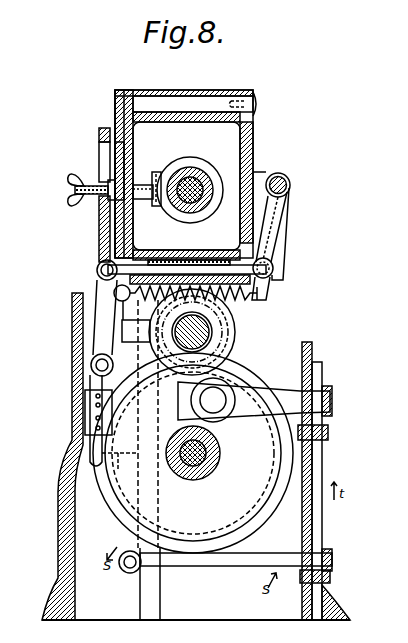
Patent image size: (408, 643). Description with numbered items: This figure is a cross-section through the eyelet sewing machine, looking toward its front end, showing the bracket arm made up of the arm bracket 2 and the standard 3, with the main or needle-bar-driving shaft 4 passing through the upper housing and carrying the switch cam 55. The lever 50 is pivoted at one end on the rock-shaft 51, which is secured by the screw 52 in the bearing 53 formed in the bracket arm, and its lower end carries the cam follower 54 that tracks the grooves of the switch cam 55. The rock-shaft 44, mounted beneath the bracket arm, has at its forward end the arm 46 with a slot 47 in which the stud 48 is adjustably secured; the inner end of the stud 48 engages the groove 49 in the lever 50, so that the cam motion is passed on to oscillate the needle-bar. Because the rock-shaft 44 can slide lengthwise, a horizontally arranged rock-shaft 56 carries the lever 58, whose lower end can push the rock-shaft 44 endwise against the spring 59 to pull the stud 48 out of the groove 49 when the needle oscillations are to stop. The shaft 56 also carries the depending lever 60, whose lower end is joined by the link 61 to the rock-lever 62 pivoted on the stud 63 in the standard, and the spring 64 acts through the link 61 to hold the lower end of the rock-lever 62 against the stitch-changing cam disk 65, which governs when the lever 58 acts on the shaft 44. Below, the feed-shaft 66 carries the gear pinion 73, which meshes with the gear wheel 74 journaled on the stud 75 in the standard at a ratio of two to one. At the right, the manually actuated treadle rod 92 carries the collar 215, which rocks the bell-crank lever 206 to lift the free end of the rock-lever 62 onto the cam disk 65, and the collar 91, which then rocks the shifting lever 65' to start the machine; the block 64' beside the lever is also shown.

The arm bracket 2 is at (254, 165).
The standard 3 is at (72, 522).
The main or needle-bar-driving shaft 4 is at (200, 182).
The rock-shaft 44 is at (233, 262).
The arm 46 is at (100, 230).
The slot 47 is at (99, 151).
The stud 48 is at (75, 190).
The groove 49 is at (119, 160).
The lever 50 is at (117, 111).
The rock-shaft 51 is at (201, 102).
The screw 52 is at (258, 104).
The bearing 53 is at (168, 85).
The cam follower 54 is at (157, 206).
The switch cam 55 is at (190, 157).
The horizontally arranged rock-shaft 56 is at (290, 186).
The lever 58 is at (286, 258).
The spring 59 is at (170, 262).
The depending lever 60 is at (279, 236).
The link 61 is at (135, 266).
The rock-lever 62 is at (100, 293).
The stud 63 is at (92, 366).
The spring 64 is at (145, 375).
The perforated block 64' is at (73, 412).
The stitch-changing cam disk 65 is at (325, 481).
The arm 65' is at (255, 386).
The feed-shaft 66 is at (190, 316).
The gear pinion 73 is at (229, 341).
The gear wheel 74 is at (260, 512).
The stud 75 is at (216, 461).
The collar 91 is at (328, 434).
The treadle rod 92 is at (323, 538).
The bell-crank lever 206 is at (208, 567).
The collar 215 is at (330, 576).